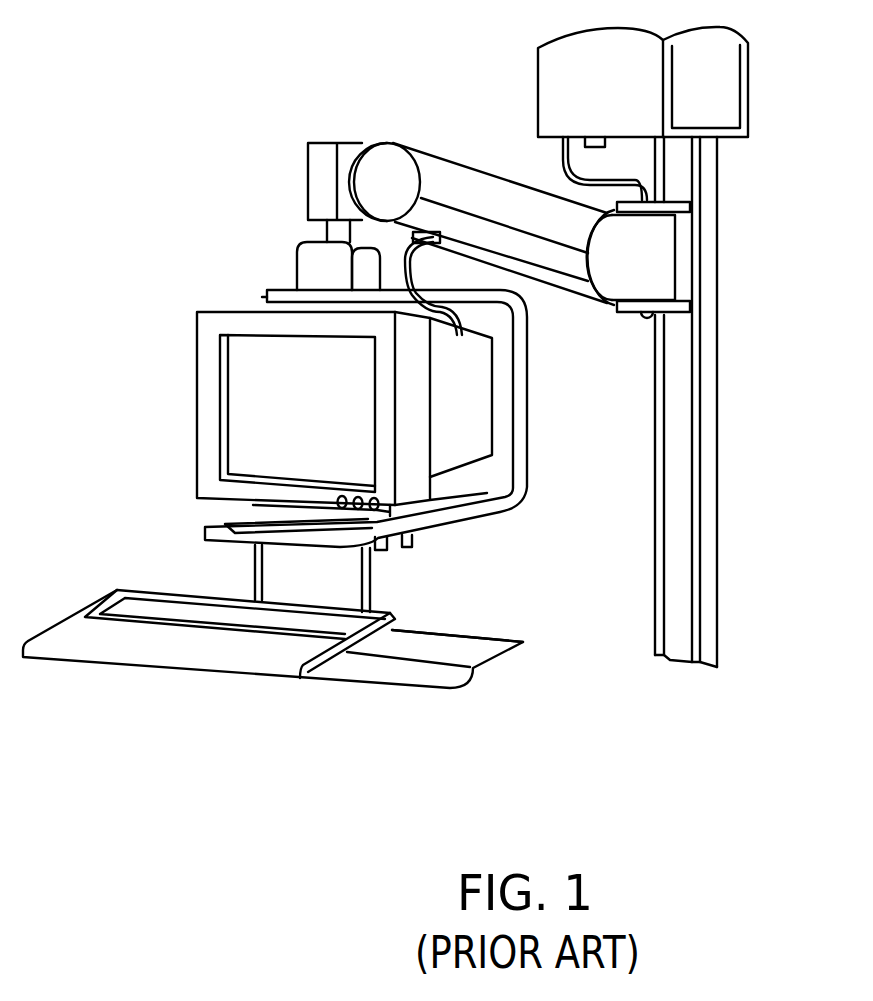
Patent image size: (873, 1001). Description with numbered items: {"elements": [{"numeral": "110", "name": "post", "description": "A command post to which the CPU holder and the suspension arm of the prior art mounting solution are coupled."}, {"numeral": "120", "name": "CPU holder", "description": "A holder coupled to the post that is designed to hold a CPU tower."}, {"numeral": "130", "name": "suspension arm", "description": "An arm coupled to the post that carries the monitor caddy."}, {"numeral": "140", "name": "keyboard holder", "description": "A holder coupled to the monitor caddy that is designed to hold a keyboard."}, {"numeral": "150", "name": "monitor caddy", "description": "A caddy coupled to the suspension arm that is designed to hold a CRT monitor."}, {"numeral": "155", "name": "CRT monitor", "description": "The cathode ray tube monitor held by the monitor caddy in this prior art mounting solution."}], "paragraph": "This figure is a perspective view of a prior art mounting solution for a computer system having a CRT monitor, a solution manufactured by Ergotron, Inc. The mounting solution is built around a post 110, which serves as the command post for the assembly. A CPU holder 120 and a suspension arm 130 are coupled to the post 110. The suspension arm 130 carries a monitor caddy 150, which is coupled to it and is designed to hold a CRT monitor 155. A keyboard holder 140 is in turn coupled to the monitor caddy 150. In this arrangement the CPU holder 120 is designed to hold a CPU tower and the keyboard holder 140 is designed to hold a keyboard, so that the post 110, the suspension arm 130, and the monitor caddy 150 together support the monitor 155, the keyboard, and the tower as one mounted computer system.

The vertical column / support post 110 is at (717, 480).
The top housing / overhead mounting unit 120 is at (710, 57).
The articulating arm pivot mount 130 is at (322, 143).
The keyboard tray 140 is at (215, 660).
The monitor mounting bracket 150 is at (267, 297).
The monitor / display 155 is at (250, 400).